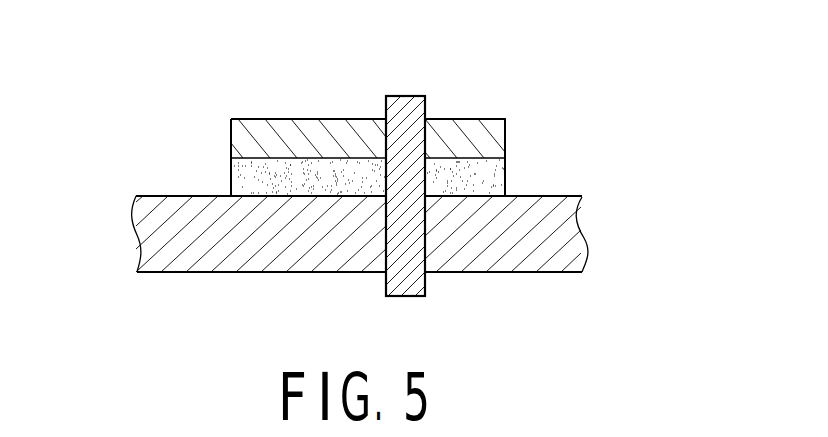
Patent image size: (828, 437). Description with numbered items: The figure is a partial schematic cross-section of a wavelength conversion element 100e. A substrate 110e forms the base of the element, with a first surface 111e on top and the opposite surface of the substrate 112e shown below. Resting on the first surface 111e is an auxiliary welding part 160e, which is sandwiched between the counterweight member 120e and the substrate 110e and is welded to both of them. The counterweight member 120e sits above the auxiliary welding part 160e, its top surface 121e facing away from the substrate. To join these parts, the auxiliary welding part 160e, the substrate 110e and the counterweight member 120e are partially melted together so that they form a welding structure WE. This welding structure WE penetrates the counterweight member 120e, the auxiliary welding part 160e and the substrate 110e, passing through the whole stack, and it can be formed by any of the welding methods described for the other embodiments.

The biosensor 100e is at (95, 43).
The substrate 110e is at (419, 264).
The first surface of the substrate 111e is at (581, 189).
The second surface of substrate 112e is at (205, 272).
The counterweight member 120e is at (412, 99).
The top surface of insulating layer 121e is at (277, 97).
The auxiliary welding part 160e is at (493, 173).
The welding structure WE is at (405, 110).